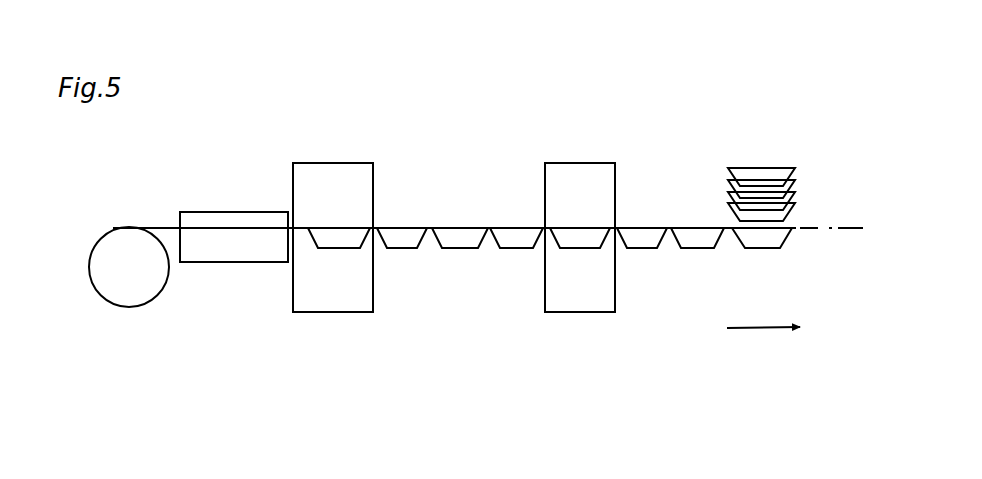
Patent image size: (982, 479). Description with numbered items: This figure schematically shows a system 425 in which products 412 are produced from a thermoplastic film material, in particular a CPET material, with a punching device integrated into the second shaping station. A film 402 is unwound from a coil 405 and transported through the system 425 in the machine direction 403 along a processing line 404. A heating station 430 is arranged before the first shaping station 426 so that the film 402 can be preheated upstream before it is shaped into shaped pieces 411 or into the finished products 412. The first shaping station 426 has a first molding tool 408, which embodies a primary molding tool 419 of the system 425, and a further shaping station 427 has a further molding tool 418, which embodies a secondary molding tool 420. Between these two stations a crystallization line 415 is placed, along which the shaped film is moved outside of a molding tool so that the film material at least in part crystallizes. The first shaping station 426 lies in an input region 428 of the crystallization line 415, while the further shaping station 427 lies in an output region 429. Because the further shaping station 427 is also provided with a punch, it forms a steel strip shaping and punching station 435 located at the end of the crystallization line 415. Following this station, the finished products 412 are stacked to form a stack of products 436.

The film 402 is at (148, 226).
The machine direction 403 is at (747, 328).
The processing line 404 is at (842, 225).
The coil 405 is at (108, 292).
The first molding tool 408 is at (351, 210).
The shaped pieces 411 is at (443, 250).
The products 412 is at (755, 167).
The crystallization line 415 is at (459, 188).
The further molding tool 418 is at (597, 210).
The primary molding tool 419 is at (302, 296).
The secondary molding tool 420 is at (597, 278).
The system 425 is at (656, 108).
The first shaping station 426 is at (332, 345).
The further shaping station 427 is at (575, 349).
The input region 428 is at (381, 224).
The output region 429 is at (533, 259).
The heating station 430 is at (223, 211).
The steel strip shaping and punching station 435 is at (595, 292).
The stack of products 436 is at (812, 158).